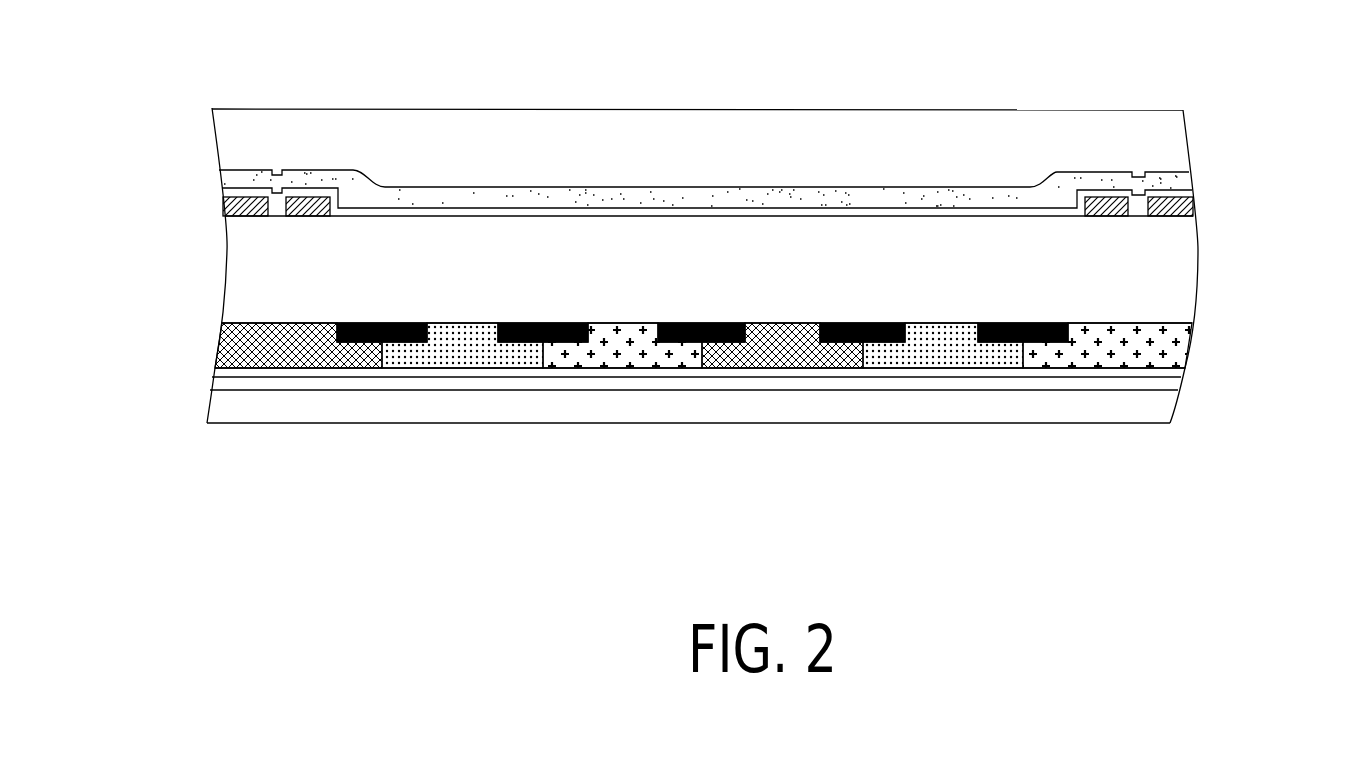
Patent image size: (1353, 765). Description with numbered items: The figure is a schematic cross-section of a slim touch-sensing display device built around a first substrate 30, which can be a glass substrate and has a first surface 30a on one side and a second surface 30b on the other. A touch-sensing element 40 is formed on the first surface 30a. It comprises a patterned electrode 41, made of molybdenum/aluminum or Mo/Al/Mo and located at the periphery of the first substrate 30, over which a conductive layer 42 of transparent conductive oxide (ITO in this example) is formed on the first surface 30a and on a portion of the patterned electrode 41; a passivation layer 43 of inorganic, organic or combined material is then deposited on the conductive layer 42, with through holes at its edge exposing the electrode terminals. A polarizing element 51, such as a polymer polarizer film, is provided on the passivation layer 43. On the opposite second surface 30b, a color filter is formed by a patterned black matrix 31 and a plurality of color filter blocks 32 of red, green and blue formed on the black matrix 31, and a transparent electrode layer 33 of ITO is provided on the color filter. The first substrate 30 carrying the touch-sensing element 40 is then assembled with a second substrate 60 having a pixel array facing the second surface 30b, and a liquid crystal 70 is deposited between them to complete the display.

The first substrate 30 is at (1180, 283).
The first surface 30a is at (1000, 218).
The second surface 30b is at (1122, 323).
The patterned black matrix 31 is at (1007, 343).
The color filter blocks 32 is at (1191, 351).
The transparent electrode layer 33 is at (641, 377).
The touch-sensing element 40 is at (785, 188).
The patterned electrode 41 is at (751, 223).
The conductive layer 42 is at (1191, 197).
The passivation layer 43 is at (1186, 177).
The polarizing element 51 is at (761, 128).
The second substrate 60 is at (1167, 408).
The liquid crystal 70 is at (1177, 386).